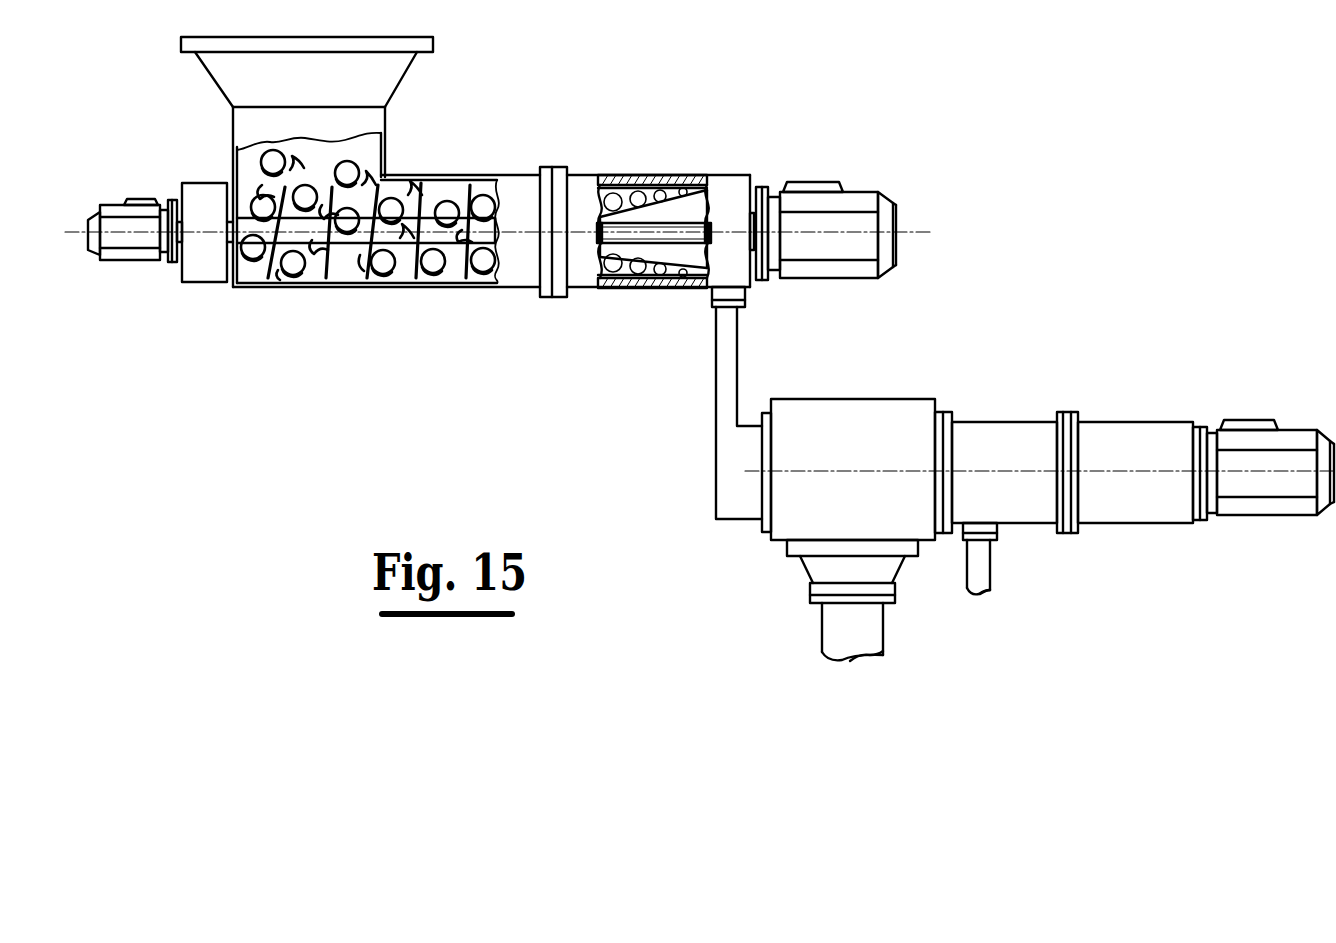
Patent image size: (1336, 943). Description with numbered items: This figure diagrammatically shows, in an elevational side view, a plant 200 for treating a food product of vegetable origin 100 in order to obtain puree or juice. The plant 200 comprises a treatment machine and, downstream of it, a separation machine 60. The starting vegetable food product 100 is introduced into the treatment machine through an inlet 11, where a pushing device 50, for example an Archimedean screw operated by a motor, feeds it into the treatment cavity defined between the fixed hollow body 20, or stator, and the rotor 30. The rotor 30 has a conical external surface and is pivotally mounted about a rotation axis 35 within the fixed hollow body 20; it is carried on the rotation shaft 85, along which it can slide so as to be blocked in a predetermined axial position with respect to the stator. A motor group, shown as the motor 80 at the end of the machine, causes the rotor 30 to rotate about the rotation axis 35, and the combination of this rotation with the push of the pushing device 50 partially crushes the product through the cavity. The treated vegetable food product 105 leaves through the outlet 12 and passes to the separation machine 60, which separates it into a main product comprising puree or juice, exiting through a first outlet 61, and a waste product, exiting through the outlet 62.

The plant 200 is at (1188, 183).
The pushing device 50 is at (238, 310).
The food product of vegetable origin 100 is at (332, 287).
The inlet 11 is at (578, 245).
The fixed hollow body 20 is at (647, 172).
The rotor 30 is at (682, 212).
The rotation shaft 85 is at (623, 242).
The motor 80 is at (878, 180).
The rotation axis 35 is at (921, 233).
The outlet 12 is at (745, 312).
The treated vegetable food product 105 is at (732, 400).
The separation machine 60 is at (1195, 655).
The first outlet 61 is at (810, 638).
The outlet 62 is at (997, 595).